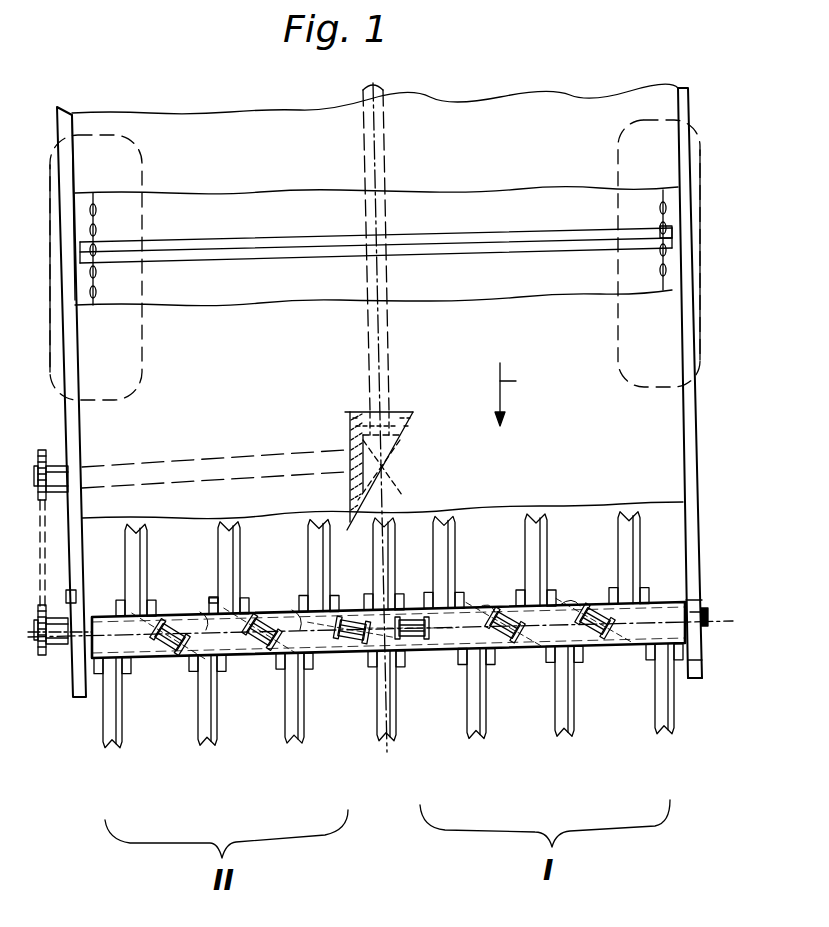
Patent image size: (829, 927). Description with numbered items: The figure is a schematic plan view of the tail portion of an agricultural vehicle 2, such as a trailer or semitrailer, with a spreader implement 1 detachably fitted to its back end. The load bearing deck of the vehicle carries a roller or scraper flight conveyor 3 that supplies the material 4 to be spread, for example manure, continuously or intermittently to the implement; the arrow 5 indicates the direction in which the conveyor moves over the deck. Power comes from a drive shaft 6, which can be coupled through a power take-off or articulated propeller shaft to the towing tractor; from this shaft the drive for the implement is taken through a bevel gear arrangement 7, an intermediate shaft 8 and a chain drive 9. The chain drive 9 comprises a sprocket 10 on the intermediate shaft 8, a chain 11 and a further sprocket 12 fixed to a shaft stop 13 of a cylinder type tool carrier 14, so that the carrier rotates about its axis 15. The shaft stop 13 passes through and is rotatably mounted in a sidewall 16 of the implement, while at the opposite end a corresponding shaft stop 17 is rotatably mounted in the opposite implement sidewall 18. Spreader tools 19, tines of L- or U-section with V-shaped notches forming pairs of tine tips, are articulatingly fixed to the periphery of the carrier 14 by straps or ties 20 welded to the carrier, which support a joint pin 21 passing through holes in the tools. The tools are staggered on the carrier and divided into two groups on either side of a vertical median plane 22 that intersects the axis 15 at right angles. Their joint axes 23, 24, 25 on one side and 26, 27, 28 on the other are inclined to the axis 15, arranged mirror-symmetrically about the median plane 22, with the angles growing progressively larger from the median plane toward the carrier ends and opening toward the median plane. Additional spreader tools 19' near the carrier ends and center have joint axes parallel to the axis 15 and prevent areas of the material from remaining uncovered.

The spreader implement 1 is at (703, 589).
The agricultural vehicle 2 is at (655, 280).
The conveyor 3 is at (675, 222).
The material 4 is at (538, 118).
The arrow 5 is at (515, 394).
The drive shaft 6 is at (378, 90).
The bevel gear arrangement 7 is at (373, 448).
The intermediate shaft 8 is at (215, 473).
The chain drive 9 is at (61, 572).
The sprocket 10 is at (42, 448).
The chain 11 is at (45, 558).
The further sprocket 12 is at (41, 658).
The shaft stop 13 is at (53, 645).
The cylinder type tool carrier 14 is at (535, 640).
The axis 15 is at (712, 622).
The sidewall 16 is at (76, 608).
The corresponding shaft stop 17 is at (715, 600).
The implement sidewall 18 is at (698, 680).
The spreader tools 19 is at (382, 603).
The additional spreader tools 19' is at (401, 722).
The straps or ties 20 is at (130, 603).
The joint pin 21 is at (213, 600).
The vertical median plane 22 is at (385, 218).
The joint axis 23 is at (207, 615).
The joint axis 24 is at (296, 616).
The joint axis 25 is at (362, 647).
The joint axis 26 is at (393, 622).
The joint axis 27 is at (472, 607).
The joint axis 28 is at (558, 608).